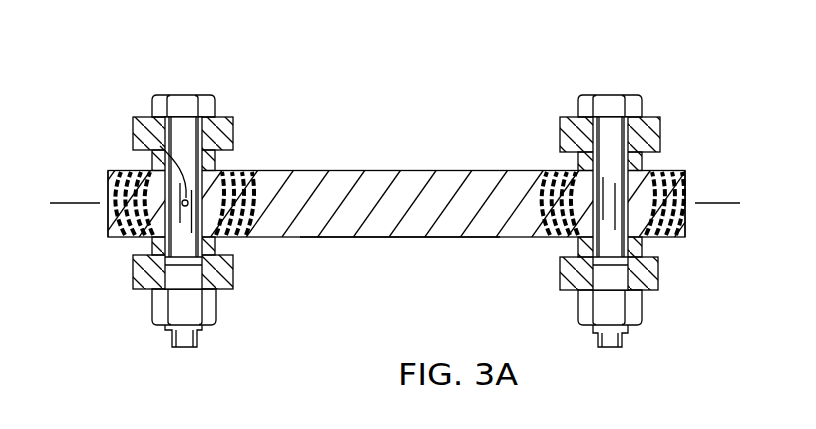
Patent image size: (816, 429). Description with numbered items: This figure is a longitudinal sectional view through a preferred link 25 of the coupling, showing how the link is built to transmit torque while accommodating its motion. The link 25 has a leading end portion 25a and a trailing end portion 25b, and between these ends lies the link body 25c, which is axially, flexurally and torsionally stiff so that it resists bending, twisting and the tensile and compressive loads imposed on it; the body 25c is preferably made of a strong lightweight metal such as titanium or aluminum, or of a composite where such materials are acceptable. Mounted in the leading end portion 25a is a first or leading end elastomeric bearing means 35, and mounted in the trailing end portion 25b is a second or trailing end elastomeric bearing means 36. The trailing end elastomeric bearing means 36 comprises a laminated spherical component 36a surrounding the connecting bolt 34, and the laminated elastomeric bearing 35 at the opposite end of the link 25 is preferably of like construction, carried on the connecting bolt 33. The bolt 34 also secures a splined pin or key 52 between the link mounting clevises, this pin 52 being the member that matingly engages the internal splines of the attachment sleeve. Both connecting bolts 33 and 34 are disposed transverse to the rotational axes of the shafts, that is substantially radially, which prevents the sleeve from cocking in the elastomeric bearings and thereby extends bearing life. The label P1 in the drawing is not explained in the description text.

The link 25 is at (395, 188).
The leading end portion 25a is at (685, 237).
The trailing end portion 25b is at (113, 237).
The link body 25c is at (430, 218).
The connecting bolt 33 is at (606, 122).
The connecting bolt 34 is at (187, 125).
The leading end elastomeric bearing means 35 is at (542, 185).
The trailing end elastomeric bearing means 36 is at (260, 172).
The laminated spherical component 36a is at (237, 170).
The splined pin 52 is at (140, 151).
The load point P1 is at (77, 203).